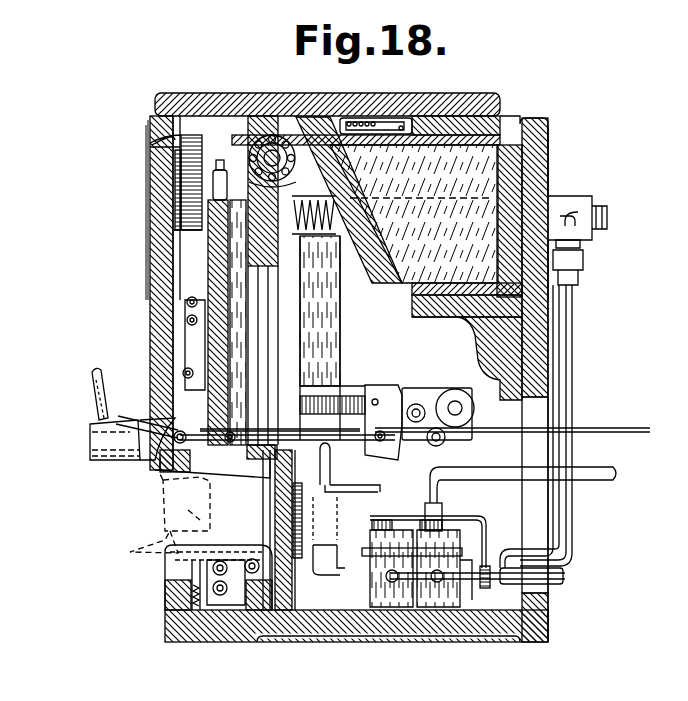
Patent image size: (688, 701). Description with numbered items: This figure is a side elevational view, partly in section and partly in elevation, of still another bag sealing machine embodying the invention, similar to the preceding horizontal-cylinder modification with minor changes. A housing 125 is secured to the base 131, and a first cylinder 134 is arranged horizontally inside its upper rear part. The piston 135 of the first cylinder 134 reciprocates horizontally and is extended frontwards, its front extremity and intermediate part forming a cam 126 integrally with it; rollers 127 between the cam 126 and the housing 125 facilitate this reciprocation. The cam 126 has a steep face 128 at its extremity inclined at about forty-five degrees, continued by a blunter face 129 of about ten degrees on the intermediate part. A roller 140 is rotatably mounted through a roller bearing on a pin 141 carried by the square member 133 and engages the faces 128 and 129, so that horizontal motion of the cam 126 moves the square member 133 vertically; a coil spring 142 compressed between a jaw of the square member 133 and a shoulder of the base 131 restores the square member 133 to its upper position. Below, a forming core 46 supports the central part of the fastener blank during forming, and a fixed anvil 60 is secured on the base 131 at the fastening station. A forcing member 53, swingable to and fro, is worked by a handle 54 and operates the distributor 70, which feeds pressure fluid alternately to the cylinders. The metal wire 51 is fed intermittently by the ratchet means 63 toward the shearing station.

The housing 125 is at (188, 96).
The pin 141 is at (242, 140).
The roller 140 is at (258, 136).
The rollers 127 is at (377, 100).
The first cylinder 134 is at (460, 114).
The piston 135 is at (503, 117).
The square member 133 is at (150, 260).
The cam 126 is at (313, 204).
The coil spring 142 is at (326, 248).
The face 128 is at (356, 262).
The blunter face 129 is at (426, 272).
The ratchet means 63 is at (370, 392).
The forming core 46 is at (148, 462).
The handle 54 is at (88, 380).
The forcing member 53 is at (88, 445).
The fixed anvil 60 is at (160, 594).
The base 131 is at (248, 640).
The distributor 70 is at (450, 600).
The metal wire 51 is at (604, 430).